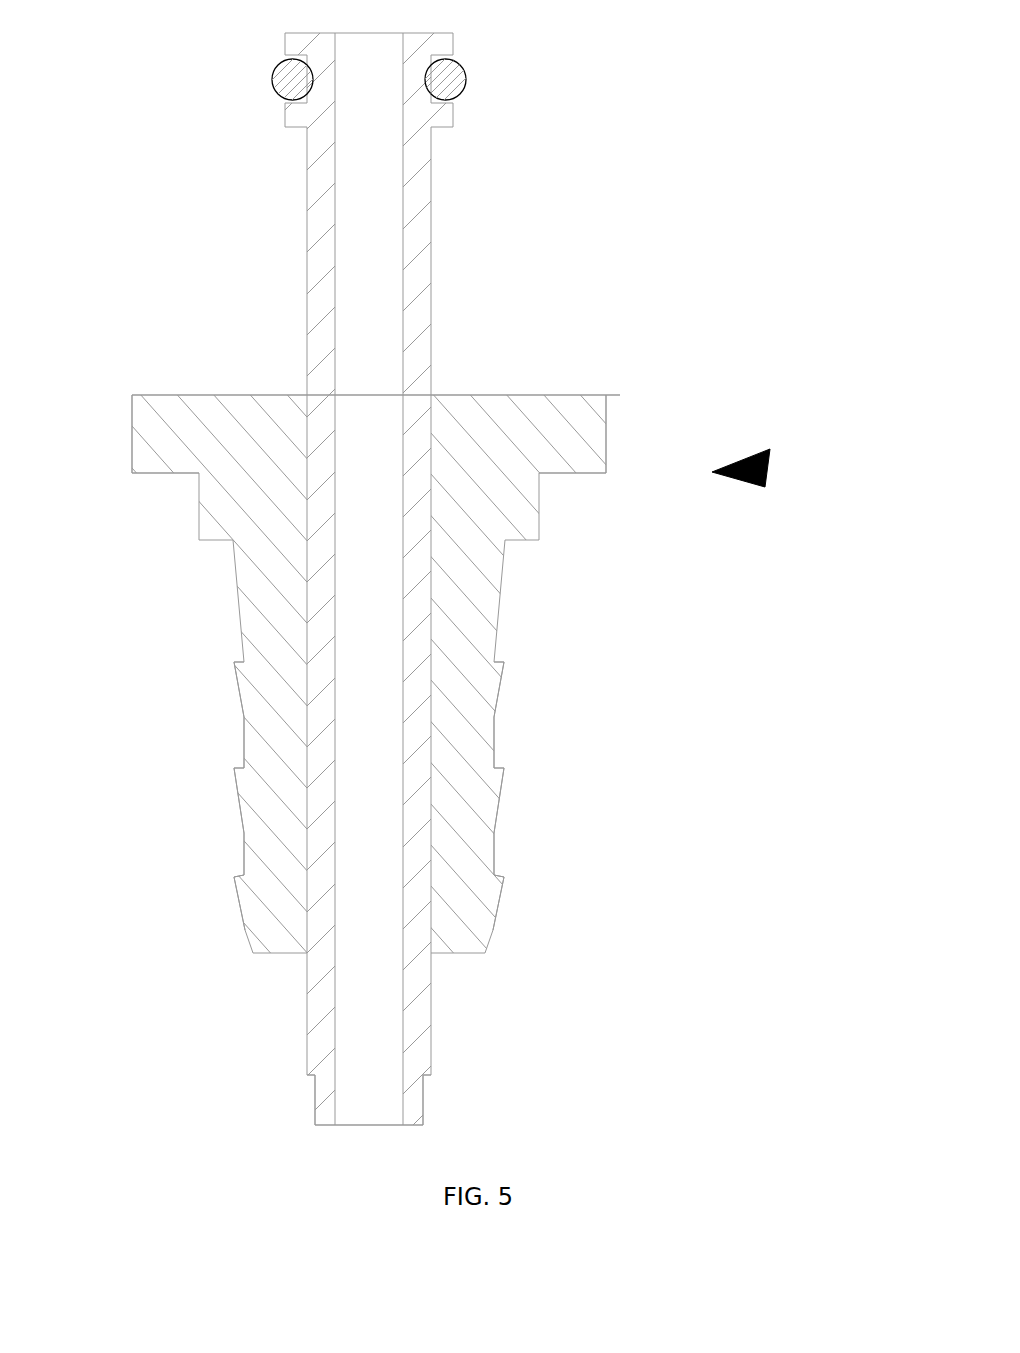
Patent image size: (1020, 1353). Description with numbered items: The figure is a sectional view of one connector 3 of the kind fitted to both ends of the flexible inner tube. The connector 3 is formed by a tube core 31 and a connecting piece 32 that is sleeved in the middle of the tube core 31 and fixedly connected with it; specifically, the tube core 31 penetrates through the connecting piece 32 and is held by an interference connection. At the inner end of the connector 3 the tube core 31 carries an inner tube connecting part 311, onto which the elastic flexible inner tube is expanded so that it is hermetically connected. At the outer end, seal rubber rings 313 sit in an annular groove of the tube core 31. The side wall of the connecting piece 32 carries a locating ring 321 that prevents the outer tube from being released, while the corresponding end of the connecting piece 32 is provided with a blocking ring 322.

The connector 3 is at (815, 497).
The tube core 31 is at (510, 676).
The connecting piece 32 is at (421, 676).
The inner tube connecting part 311 is at (243, 1031).
The seal rubber ring 313 is at (260, 131).
The locating ring 321 is at (273, 796).
The blocking ring 322 is at (324, 506).